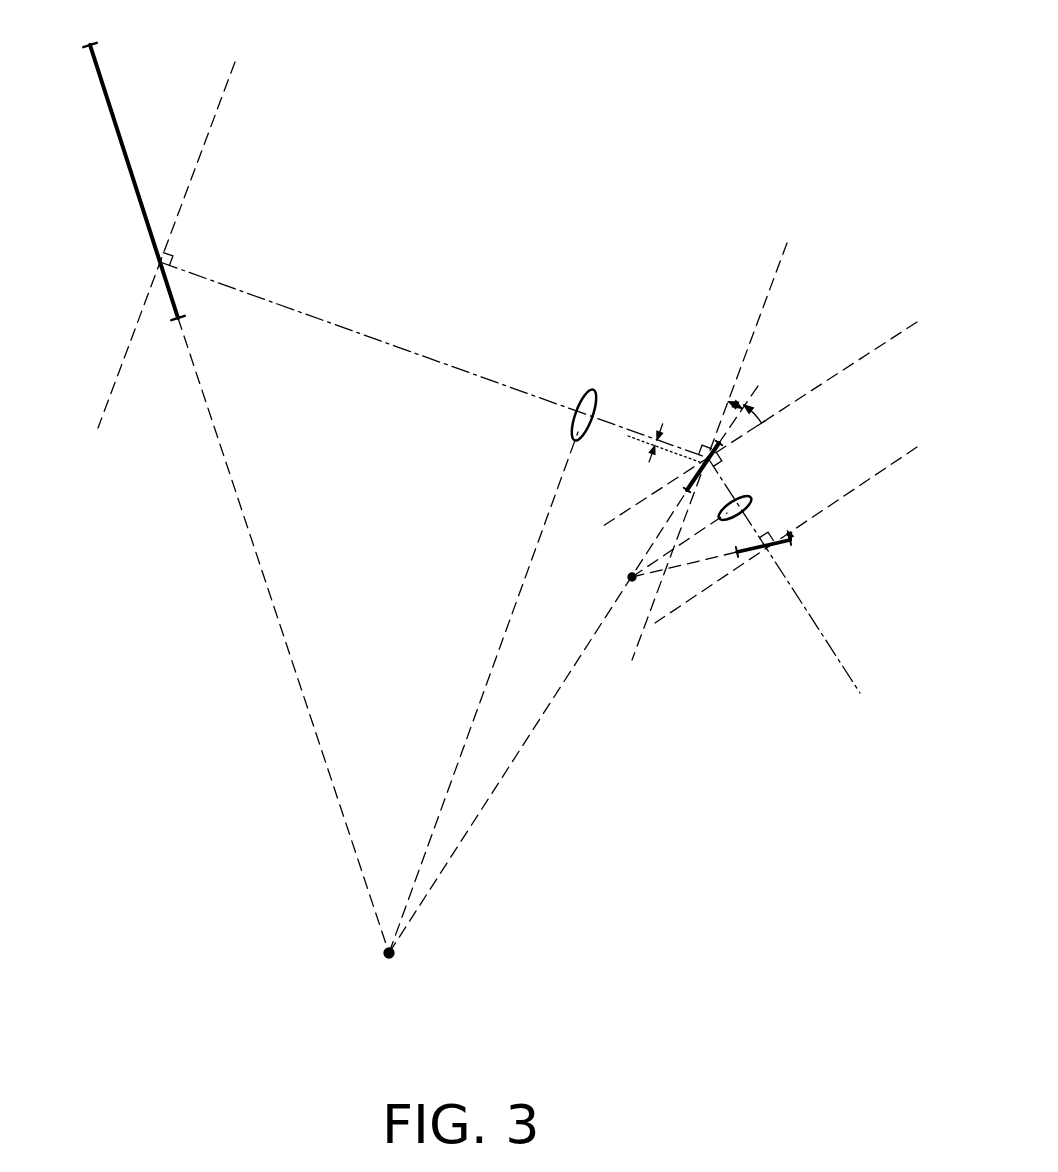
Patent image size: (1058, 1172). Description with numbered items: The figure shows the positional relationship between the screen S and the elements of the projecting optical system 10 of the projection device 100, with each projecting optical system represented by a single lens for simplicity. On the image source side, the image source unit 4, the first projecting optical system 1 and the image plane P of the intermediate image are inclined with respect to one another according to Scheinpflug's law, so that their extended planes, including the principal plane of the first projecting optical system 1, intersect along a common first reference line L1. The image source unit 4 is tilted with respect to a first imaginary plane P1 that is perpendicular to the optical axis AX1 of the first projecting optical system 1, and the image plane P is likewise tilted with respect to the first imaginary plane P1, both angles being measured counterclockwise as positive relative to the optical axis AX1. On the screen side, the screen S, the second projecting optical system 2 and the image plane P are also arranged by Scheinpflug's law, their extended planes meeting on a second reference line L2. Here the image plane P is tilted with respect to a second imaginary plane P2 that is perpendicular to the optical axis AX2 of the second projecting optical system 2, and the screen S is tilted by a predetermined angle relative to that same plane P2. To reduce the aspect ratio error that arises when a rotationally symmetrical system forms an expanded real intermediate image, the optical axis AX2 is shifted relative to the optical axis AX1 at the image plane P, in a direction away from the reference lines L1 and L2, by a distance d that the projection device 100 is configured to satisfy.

The screen S is at (107, 97).
The second imaginary plane P2 is at (225, 92).
The projection device 100 is at (532, 160).
The projecting optical system 10 is at (658, 298).
The optical axis of the second projecting optical system AX2 is at (253, 295).
The second projecting optical system 2 is at (580, 402).
The distance between the optical axes d is at (666, 428).
The first imaginary plane P1 is at (866, 356).
The first projecting optical system 1 is at (746, 498).
The image plane of the intermediate image P is at (683, 486).
The first reference line L1 is at (630, 578).
The image source unit 4 is at (742, 557).
The optical axis of the first projecting optical system AX1 is at (852, 681).
The second reference line L2 is at (393, 957).